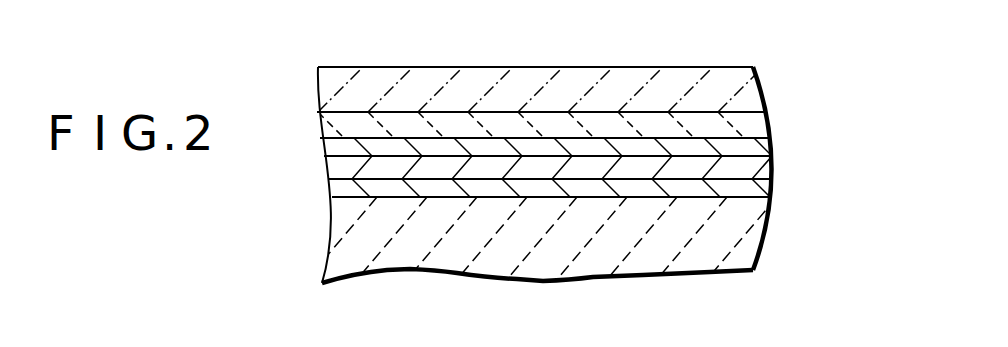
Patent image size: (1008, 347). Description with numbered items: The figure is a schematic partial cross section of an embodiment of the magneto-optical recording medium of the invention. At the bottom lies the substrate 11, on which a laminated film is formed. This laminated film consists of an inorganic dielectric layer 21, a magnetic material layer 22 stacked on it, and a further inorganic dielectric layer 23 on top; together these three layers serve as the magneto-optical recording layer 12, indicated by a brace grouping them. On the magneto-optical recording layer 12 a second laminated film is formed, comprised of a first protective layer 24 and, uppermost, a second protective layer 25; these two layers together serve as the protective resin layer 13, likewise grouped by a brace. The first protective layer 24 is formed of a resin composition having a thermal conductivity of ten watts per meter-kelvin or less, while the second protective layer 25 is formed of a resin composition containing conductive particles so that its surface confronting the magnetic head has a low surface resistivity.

The substrate 11 is at (571, 243).
The magneto-optical recording layer 12 is at (597, 187).
The protective resin layer 13 is at (603, 95).
The inorganic dielectric layer 21 is at (572, 210).
The magnetic material layer 22 is at (570, 182).
The inorganic dielectric layer 23 is at (572, 147).
The first protective layer 24 is at (578, 117).
The second protective layer 25 is at (572, 83).